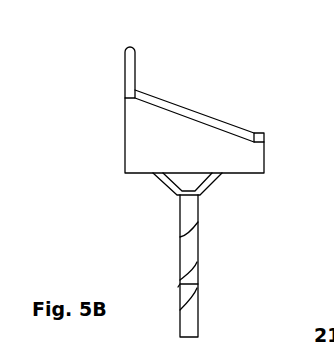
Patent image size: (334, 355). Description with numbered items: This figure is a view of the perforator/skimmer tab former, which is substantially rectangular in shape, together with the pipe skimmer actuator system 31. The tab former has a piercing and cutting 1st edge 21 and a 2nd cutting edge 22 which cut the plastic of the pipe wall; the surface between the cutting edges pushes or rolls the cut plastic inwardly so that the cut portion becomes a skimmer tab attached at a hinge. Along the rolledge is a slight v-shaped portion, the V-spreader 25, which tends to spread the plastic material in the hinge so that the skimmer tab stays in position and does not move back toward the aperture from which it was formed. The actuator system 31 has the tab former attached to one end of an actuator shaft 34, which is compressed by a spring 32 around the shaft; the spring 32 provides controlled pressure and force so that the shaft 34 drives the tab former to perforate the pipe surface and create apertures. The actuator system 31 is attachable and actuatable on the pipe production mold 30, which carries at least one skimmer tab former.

The perforator/skimmer tab former 1st edge 21 is at (135, 62).
The perforator/skimmer tab former 2nd edge 22 is at (177, 104).
The perforator/skimmer tab former V-spreader 25 is at (263, 133).
The perforator/skimmer pipe production mold 30 is at (125, 117).
The pipe skimmer actuator system 31 is at (256, 208).
The spring 32 is at (199, 222).
The actuator shaft 34 is at (180, 237).